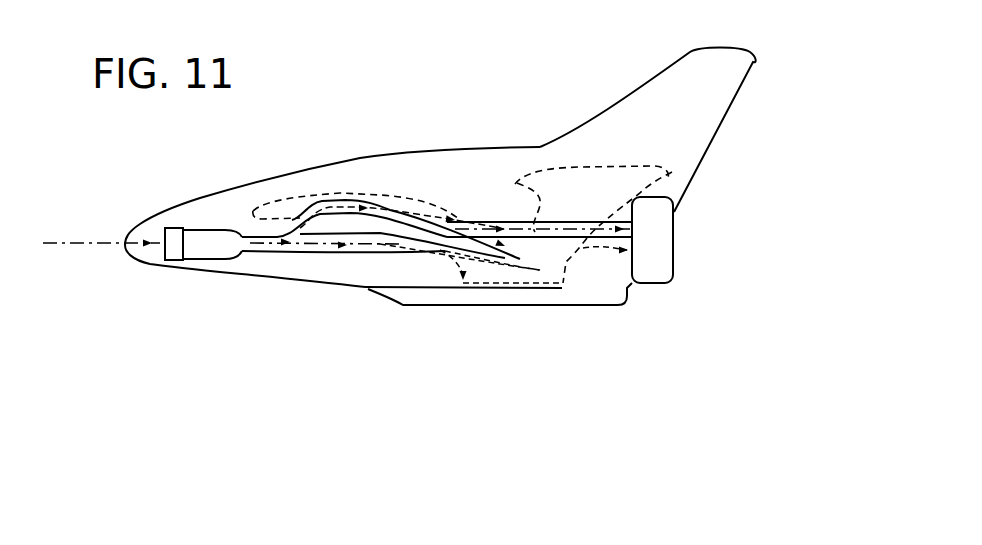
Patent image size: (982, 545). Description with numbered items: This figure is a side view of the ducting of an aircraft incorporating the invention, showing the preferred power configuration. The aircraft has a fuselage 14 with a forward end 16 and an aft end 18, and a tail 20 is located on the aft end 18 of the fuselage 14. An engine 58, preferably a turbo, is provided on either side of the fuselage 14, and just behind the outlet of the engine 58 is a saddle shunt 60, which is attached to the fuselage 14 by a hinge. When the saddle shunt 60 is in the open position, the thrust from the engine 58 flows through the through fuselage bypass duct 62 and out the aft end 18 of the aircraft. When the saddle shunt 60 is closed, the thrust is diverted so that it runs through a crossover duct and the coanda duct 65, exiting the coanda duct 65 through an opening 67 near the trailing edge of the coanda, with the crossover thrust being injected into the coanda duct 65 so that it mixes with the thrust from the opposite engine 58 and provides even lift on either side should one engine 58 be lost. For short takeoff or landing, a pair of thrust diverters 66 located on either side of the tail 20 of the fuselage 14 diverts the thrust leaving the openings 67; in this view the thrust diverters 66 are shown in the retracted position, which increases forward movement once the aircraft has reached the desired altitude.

The fuselage 14 is at (418, 272).
The forward end 16 is at (130, 235).
The aft end 18 is at (615, 277).
The tail 20 is at (710, 85).
The engine 58 is at (196, 252).
The saddle shunt 60 is at (288, 251).
The through fuselage bypass duct 62 is at (333, 252).
The coanda duct 65 is at (300, 218).
The thrust diverter 66 is at (655, 242).
The opening 67 is at (464, 222).